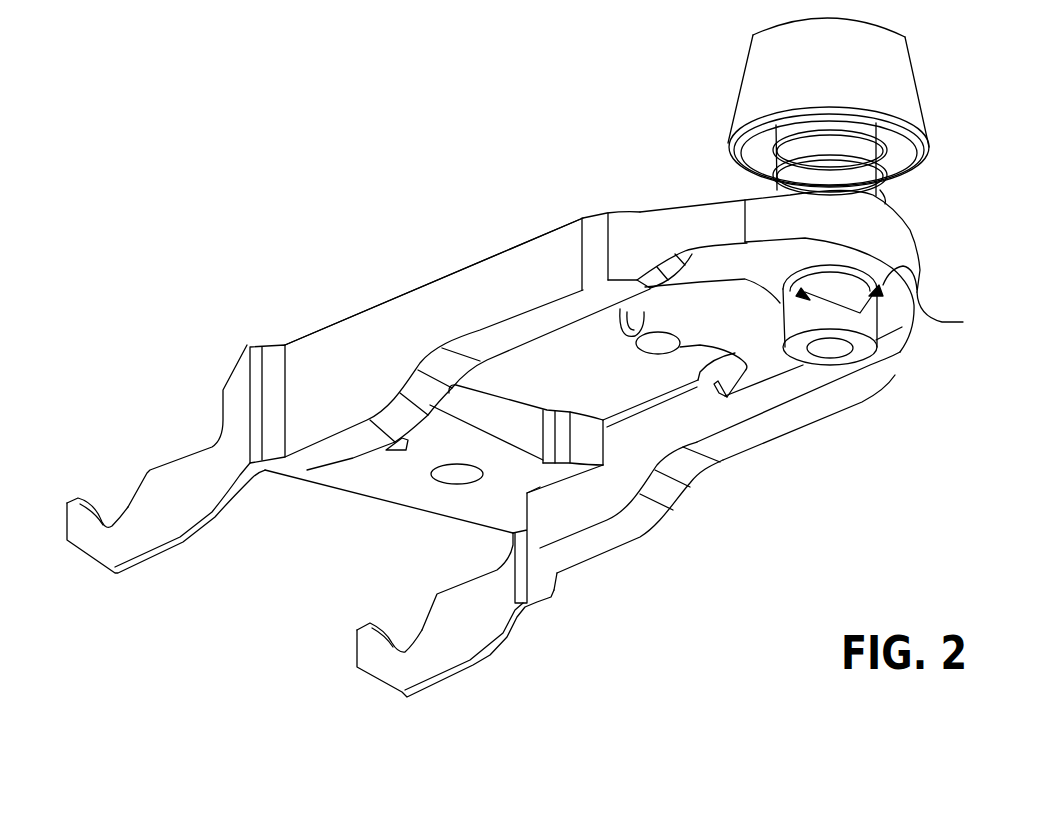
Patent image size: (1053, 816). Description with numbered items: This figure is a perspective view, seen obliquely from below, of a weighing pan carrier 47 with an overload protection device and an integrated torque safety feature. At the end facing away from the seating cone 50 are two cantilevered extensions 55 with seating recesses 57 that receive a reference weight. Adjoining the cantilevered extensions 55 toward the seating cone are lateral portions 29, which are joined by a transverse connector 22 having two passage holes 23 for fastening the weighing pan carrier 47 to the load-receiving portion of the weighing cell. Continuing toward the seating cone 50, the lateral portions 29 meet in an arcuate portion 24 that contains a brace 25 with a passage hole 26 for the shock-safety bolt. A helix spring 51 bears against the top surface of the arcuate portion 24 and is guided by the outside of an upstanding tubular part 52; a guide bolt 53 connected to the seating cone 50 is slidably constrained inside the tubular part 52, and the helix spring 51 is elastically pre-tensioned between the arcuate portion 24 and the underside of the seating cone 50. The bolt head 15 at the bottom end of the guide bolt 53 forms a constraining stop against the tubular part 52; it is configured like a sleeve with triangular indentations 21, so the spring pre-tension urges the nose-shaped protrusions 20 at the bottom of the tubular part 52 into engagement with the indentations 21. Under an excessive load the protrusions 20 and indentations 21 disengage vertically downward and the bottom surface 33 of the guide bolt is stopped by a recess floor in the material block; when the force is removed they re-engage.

The bolt head 15 is at (838, 306).
The nose-shaped protrusions 20 is at (862, 297).
The triangular indentations 21 is at (943, 294).
The transverse connector 22 is at (487, 493).
The passage holes 23 is at (450, 470).
The arcuate portion 24 is at (895, 247).
The brace 25 is at (752, 355).
The passage hole 26 is at (648, 343).
The lateral portions 29 is at (533, 268).
The bottom surface 33 is at (862, 344).
The weighing pan carrier 47 is at (376, 283).
The seating cone 50 is at (885, 63).
The helix spring 51 is at (880, 198).
The tubular part 52 is at (840, 158).
The guide bolt 53 is at (790, 293).
The cantilevered extensions 55 is at (123, 542).
The seating recesses 57 is at (112, 517).